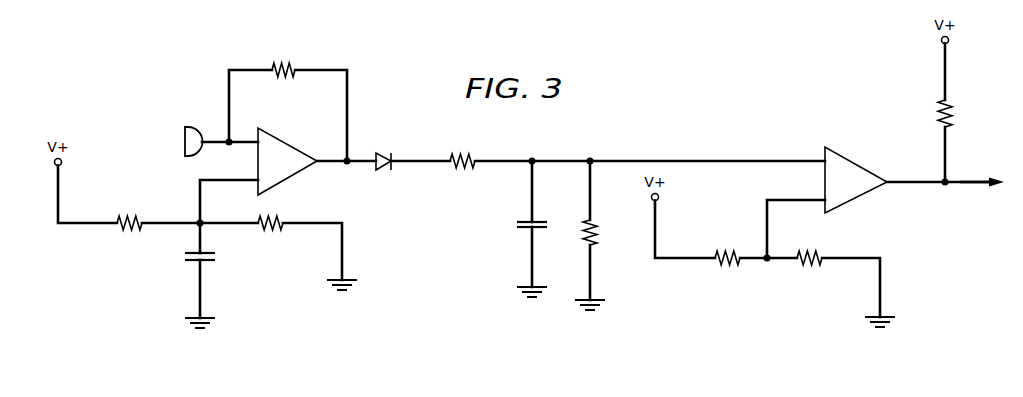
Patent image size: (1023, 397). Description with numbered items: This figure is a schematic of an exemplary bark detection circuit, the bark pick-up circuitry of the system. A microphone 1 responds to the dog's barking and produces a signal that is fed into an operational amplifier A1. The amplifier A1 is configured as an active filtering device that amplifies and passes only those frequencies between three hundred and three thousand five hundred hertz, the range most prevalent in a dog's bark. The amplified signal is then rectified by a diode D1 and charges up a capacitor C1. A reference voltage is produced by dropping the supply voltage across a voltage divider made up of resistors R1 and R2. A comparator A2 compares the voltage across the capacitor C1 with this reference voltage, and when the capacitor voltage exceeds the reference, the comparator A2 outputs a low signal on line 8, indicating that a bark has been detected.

The microphone 1 is at (193, 127).
The line 8 is at (965, 178).
The operational amplifier A1 is at (287, 161).
The comparator A2 is at (856, 180).
The diode D1 is at (384, 153).
The capacitor C1 is at (522, 224).
The resistor R1 is at (727, 250).
The resistor R2 is at (809, 250).